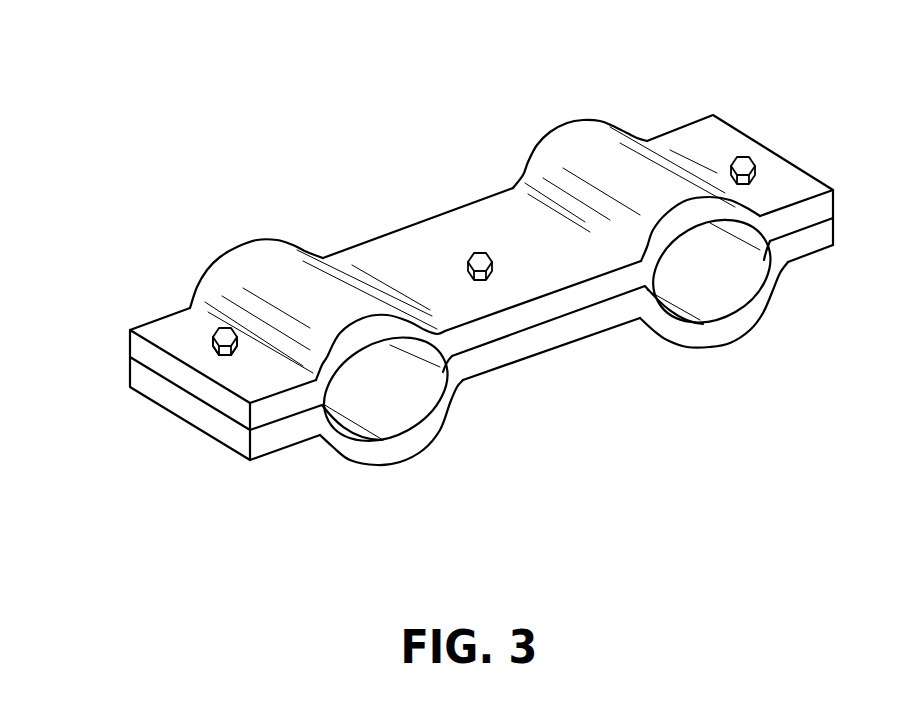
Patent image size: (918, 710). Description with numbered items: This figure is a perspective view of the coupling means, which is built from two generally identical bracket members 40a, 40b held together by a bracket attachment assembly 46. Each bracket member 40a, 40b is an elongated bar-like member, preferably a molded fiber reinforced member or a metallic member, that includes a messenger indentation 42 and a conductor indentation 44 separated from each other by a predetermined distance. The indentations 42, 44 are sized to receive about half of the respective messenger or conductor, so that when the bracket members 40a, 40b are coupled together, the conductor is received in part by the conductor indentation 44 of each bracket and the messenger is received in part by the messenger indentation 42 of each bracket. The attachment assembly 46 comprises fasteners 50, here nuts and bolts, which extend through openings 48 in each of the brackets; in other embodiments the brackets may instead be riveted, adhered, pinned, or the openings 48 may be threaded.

The bracket member 40a is at (271, 251).
The bracket member 40b is at (383, 465).
The messenger indentation 42 is at (385, 371).
The conductor indentation 44 is at (688, 267).
The bracket attachment assembly 46 is at (211, 333).
The openings 48 is at (223, 357).
The fasteners 50 is at (212, 343).